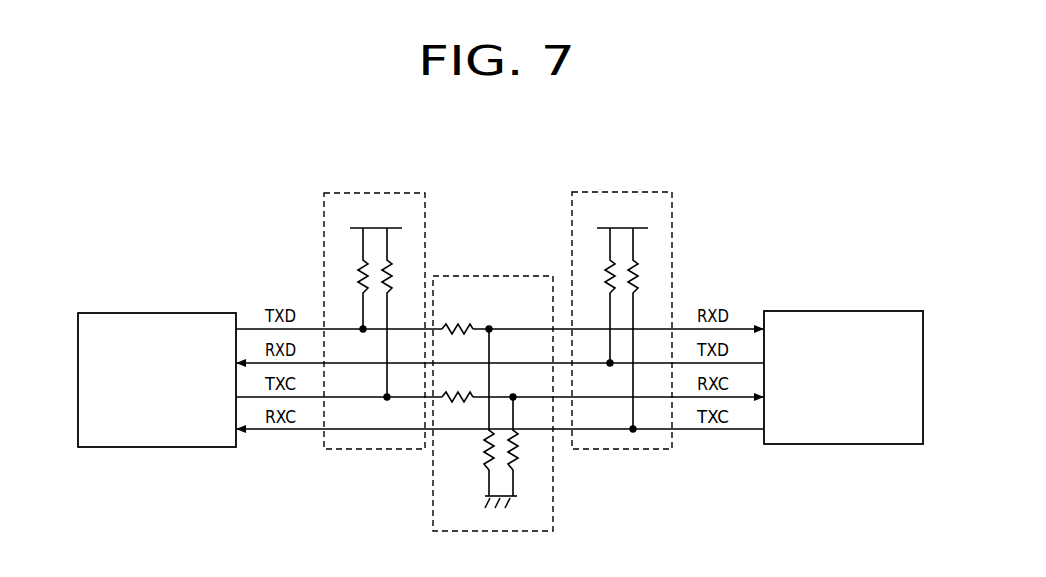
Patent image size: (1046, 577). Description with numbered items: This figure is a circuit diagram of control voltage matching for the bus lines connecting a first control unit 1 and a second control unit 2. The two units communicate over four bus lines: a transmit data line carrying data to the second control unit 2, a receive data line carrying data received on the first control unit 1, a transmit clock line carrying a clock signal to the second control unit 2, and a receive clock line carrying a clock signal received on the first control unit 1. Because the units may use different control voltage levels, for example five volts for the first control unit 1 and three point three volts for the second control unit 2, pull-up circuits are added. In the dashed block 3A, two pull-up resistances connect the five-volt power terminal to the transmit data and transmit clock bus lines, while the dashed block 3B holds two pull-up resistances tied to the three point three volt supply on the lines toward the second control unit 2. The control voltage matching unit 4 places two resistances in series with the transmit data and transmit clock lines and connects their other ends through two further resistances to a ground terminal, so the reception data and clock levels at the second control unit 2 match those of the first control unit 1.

The first control unit 1 is at (157, 313).
The second control unit 2 is at (842, 311).
The first pull-up resistor unit 3A is at (381, 193).
The second pull-up resistor unit 3B is at (628, 192).
The control voltage matching unit 4 is at (498, 276).